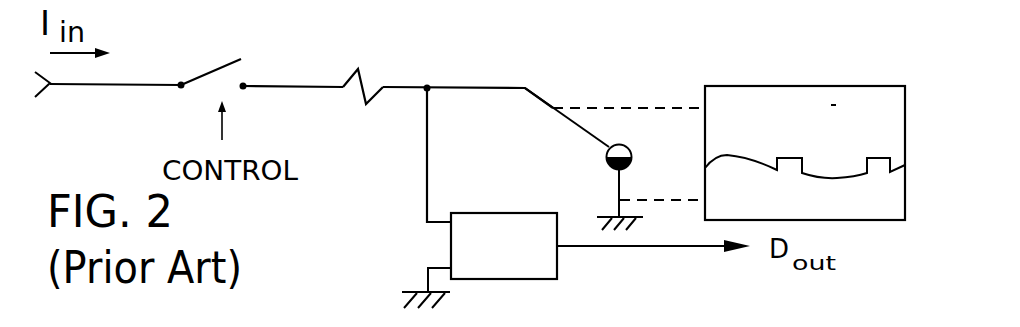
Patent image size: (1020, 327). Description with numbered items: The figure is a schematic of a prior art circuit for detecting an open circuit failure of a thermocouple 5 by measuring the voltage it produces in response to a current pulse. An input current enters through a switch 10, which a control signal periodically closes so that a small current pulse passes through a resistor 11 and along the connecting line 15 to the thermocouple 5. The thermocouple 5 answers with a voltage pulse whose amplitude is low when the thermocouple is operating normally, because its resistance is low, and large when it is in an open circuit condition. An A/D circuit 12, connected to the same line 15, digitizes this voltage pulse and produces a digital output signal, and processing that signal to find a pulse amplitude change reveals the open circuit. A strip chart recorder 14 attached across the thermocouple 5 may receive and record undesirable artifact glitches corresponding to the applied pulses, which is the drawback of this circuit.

The switch 10 is at (287, 62).
The resistor 11 is at (367, 83).
The signal line 15 is at (466, 86).
The thermocouple 5 is at (626, 144).
The strip chart recorder 14 is at (788, 86).
The A/D circuit 12 is at (492, 213).